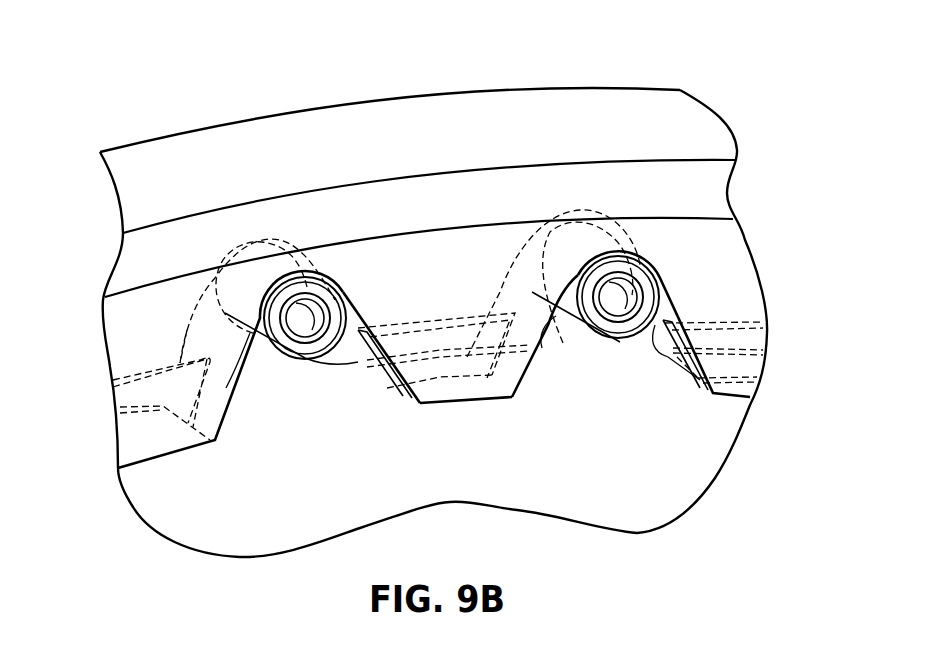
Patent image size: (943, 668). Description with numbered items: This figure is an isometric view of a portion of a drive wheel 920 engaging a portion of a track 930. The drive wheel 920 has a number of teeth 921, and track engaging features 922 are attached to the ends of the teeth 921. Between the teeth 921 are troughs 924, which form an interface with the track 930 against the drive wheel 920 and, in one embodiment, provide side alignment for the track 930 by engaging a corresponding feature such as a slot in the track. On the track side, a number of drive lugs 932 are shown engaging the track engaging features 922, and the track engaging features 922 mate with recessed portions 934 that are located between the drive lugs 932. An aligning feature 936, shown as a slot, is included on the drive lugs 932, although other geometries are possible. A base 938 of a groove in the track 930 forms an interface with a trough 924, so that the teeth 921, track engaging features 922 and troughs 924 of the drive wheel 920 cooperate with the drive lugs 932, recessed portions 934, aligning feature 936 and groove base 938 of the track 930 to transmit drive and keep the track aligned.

The drive wheel 920 is at (205, 80).
The track 930 is at (682, 125).
The recessed portions 934 is at (352, 297).
The track engaging features 922 is at (628, 343).
The teeth 921 is at (546, 338).
The troughs 924 is at (440, 355).
The aligning feature 936 is at (373, 367).
The drive lugs 932 is at (386, 380).
The base of a groove 938 is at (437, 316).